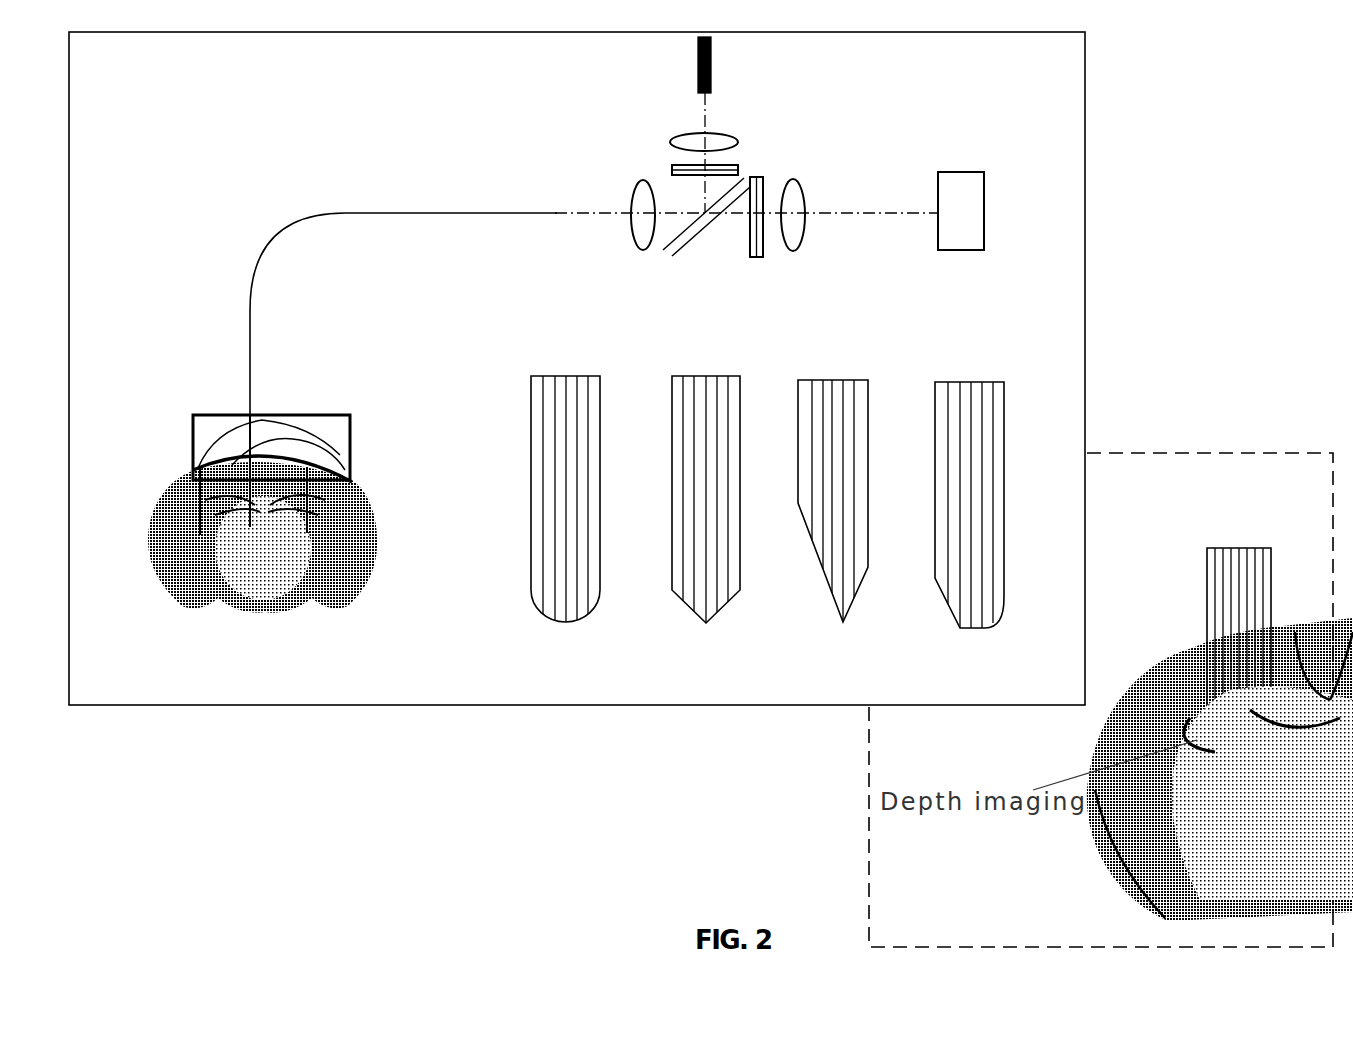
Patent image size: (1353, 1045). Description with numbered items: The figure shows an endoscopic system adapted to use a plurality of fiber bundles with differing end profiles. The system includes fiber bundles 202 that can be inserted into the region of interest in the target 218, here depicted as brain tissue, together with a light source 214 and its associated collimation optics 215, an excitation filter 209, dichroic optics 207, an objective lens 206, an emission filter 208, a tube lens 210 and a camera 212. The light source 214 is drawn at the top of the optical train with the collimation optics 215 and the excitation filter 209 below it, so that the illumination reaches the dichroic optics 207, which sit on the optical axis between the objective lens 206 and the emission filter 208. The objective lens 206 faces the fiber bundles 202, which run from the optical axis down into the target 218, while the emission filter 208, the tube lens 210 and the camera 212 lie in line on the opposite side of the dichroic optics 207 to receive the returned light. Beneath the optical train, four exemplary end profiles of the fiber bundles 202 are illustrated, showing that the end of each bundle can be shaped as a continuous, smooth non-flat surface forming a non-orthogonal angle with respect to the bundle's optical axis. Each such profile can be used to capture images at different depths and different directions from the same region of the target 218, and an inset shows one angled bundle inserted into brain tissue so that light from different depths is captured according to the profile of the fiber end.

The fiber bundles 202 is at (363, 205).
The objective lens 206 is at (633, 224).
The dichroic optics 207 is at (693, 222).
The emission filter 208 is at (758, 253).
The excitation filter 209 is at (740, 167).
The tube lens 210 is at (807, 228).
The camera 212 is at (1030, 222).
The light source 214 is at (711, 62).
The collimation optics 215 is at (693, 137).
The target 218 is at (353, 542).